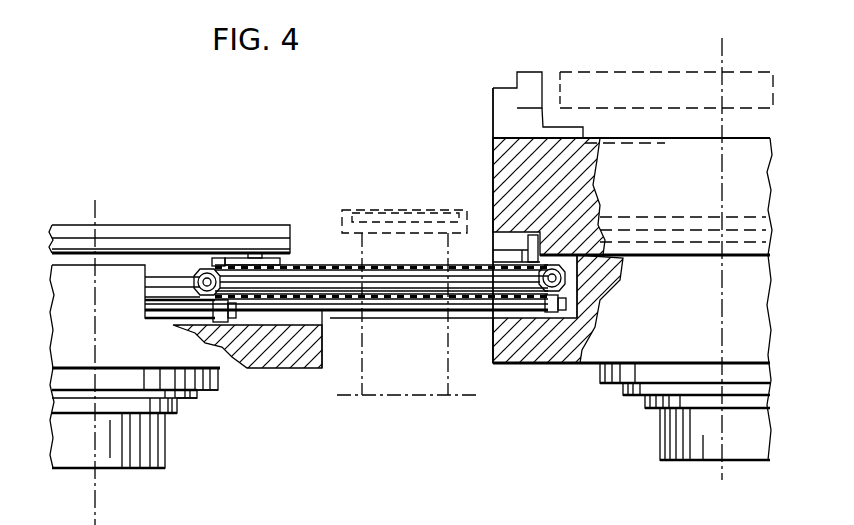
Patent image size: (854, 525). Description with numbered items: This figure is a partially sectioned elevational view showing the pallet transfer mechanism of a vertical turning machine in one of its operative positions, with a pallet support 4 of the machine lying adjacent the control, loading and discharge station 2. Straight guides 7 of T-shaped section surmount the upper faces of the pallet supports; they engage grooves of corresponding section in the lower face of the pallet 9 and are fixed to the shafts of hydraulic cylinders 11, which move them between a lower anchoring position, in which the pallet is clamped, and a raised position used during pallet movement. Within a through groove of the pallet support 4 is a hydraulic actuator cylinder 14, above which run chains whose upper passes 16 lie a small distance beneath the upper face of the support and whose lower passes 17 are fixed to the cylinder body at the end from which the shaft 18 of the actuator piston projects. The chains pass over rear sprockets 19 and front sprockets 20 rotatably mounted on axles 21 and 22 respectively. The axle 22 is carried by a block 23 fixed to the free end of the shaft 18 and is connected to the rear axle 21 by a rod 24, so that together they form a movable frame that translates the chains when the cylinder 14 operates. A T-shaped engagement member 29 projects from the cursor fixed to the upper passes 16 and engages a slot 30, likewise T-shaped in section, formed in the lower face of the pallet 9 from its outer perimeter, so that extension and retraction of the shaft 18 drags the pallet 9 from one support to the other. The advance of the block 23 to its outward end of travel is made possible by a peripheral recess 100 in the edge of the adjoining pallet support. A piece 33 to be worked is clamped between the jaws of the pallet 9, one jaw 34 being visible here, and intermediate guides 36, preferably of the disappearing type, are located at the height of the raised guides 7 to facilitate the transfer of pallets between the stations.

The control, loading and discharge station 2 is at (609, 436).
The pallet support 4 is at (246, 392).
The straight guides 7 is at (135, 238).
The pallet 9 is at (690, 137).
The hydraulic cylinders 11 is at (263, 258).
The hydraulic actuator cylinder 14 is at (158, 307).
The upper passes 16 is at (330, 264).
The lower passes 17 is at (345, 312).
The shaft 18 is at (468, 308).
The rear sprockets 19 is at (198, 270).
The front sprockets 20 is at (566, 280).
The axle 21 is at (214, 258).
The axle 22 is at (595, 200).
The block 23 is at (565, 322).
The rod 24 is at (397, 300).
The T-shaped engagement member 29 is at (526, 218).
The slot 30 is at (494, 200).
The piece 33 is at (615, 68).
The jaw 34 is at (506, 105).
The intermediate guides 36 is at (403, 210).
The peripheral recess 100 is at (492, 322).